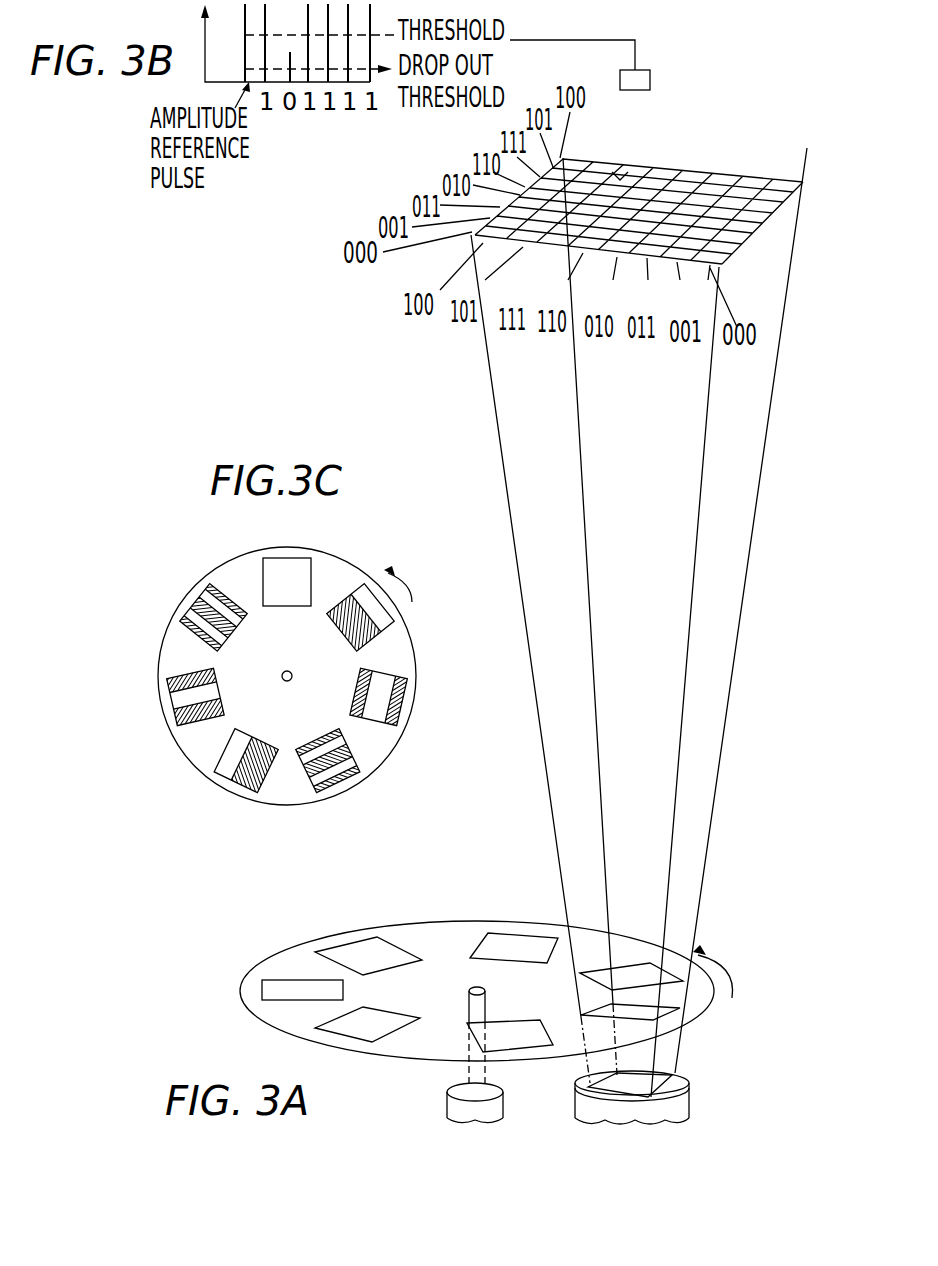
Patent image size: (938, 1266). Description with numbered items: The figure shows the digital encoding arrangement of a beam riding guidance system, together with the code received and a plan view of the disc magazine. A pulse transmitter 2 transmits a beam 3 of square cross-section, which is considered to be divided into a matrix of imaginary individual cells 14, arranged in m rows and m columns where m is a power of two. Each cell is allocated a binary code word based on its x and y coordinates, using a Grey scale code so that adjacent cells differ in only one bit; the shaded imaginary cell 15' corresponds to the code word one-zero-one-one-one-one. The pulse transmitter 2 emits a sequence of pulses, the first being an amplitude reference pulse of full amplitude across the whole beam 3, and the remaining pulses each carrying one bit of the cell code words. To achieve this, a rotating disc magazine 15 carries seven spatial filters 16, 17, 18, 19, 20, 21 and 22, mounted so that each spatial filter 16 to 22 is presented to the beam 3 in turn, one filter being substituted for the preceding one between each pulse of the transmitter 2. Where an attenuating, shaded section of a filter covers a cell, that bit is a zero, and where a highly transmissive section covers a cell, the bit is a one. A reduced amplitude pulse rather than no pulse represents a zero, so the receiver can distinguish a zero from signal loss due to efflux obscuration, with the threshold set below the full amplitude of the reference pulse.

In FIG. 3A, the pulse transmitter 2 is at (678, 1110).
In FIG. 3A, the beam 3 is at (511, 531).
In FIG. 3A, the matrix of imaginary individual cells 14 is at (742, 254).
In FIG. 3A, the rotating disc magazine 15 is at (477, 979).
In FIG. 3C, the rotating disc magazine 15 is at (297, 665).
In FIG. 3A, the imaginary cell 15' is at (678, 150).
In FIG. 3B, the imaginary cell 15' is at (603, 65).
In FIG. 3A, the spatial filter 16 is at (522, 945).
In FIG. 3C, the spatial filter 16 is at (295, 558).
In FIG. 3A, the spatial filter 17 is at (640, 970).
In FIG. 3C, the spatial filter 17 is at (393, 627).
In FIG. 3A, the spatial filter 18 is at (665, 1012).
In FIG. 3C, the spatial filter 18 is at (400, 707).
In FIG. 3A, the spatial filter 19 is at (523, 1038).
In FIG. 3C, the spatial filter 19 is at (332, 783).
In FIG. 3A, the spatial filter 20 is at (353, 1030).
In FIG. 3C, the spatial filter 20 is at (243, 783).
In FIG. 3A, the spatial filter 21 is at (287, 985).
In FIG. 3C, the spatial filter 21 is at (185, 725).
In FIG. 3A, the spatial filter 22 is at (352, 947).
In FIG. 3C, the spatial filter 22 is at (213, 587).